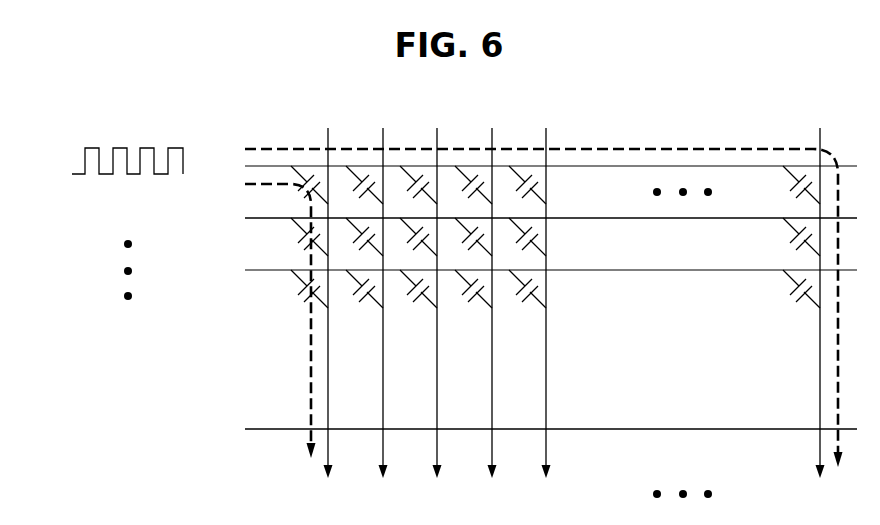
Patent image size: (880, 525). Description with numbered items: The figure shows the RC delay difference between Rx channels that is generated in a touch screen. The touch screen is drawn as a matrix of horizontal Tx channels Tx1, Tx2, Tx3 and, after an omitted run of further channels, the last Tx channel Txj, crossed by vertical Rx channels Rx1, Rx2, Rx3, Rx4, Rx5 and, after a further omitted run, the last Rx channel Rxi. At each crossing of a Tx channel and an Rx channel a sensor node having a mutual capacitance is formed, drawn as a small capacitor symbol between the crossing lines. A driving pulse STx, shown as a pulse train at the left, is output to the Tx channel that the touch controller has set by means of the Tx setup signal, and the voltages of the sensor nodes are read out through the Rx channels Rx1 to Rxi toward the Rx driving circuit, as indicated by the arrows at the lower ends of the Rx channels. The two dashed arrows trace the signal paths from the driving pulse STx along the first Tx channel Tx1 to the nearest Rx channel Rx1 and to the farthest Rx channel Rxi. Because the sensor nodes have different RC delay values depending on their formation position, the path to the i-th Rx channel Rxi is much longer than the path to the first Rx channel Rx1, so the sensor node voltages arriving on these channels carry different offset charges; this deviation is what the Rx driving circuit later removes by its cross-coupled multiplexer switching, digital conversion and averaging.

The driving pulse STx is at (111, 161).
The first Tx channel Tx1 is at (531, 166).
The second Tx channel Tx2 is at (531, 218).
The third Tx channel Tx3 is at (531, 270).
The j-th Tx channel Txj is at (531, 429).
The first Rx channel Rx1 is at (328, 316).
The second Rx channel Rx2 is at (383, 316).
The third Rx channel Rx3 is at (437, 316).
The fourth Rx channel Rx4 is at (492, 316).
The fifth Rx channel Rx5 is at (546, 316).
The i-th Rx channel Rxi is at (819, 316).